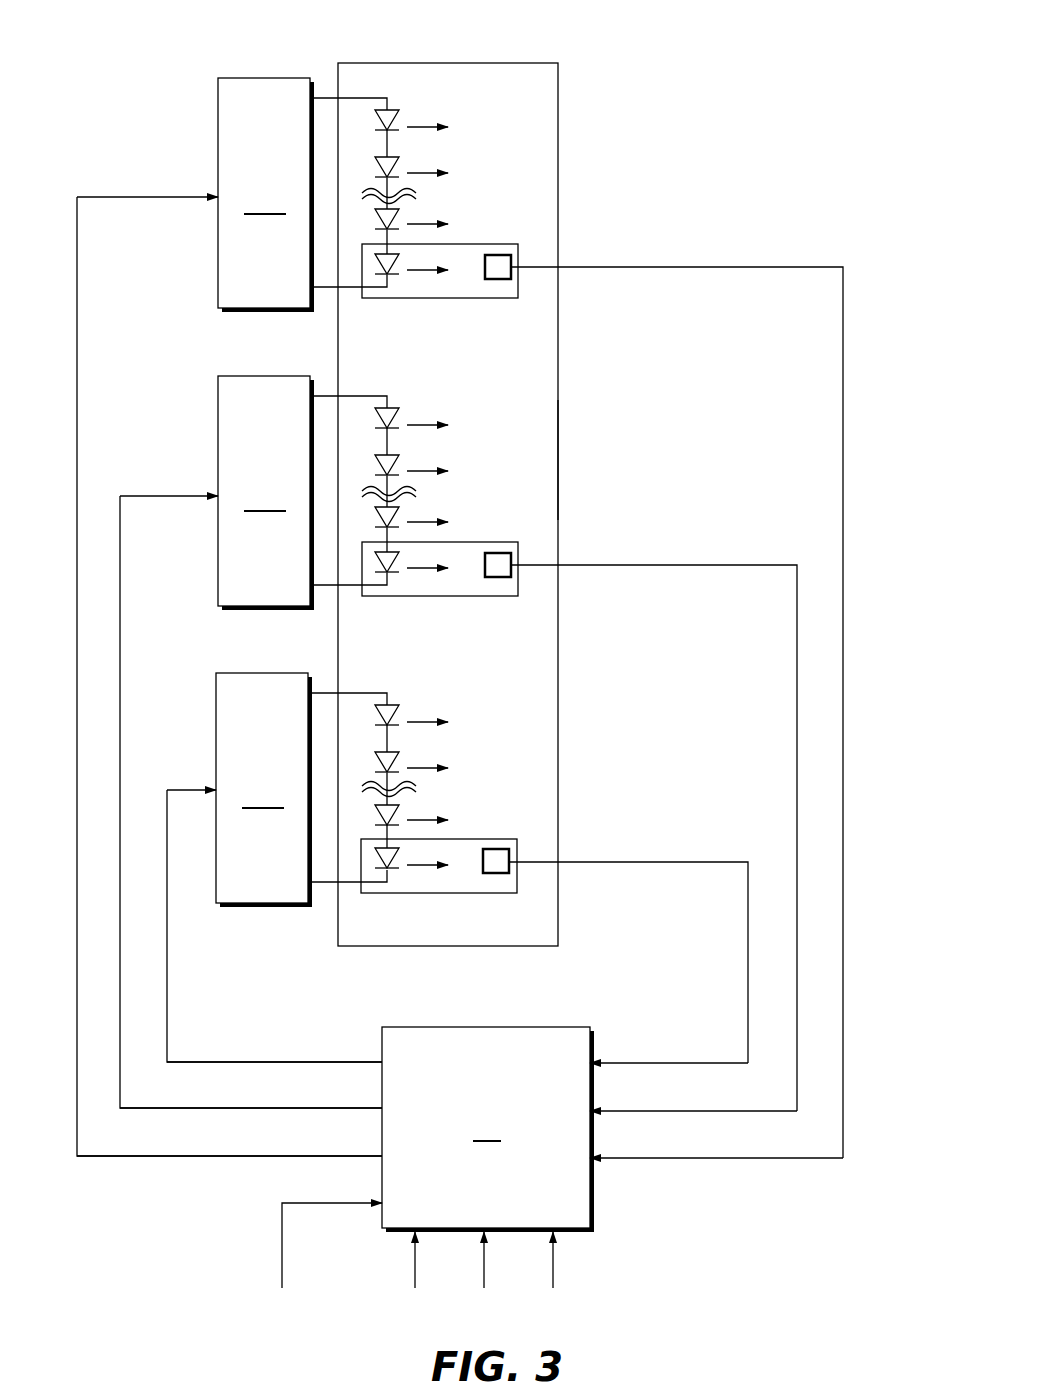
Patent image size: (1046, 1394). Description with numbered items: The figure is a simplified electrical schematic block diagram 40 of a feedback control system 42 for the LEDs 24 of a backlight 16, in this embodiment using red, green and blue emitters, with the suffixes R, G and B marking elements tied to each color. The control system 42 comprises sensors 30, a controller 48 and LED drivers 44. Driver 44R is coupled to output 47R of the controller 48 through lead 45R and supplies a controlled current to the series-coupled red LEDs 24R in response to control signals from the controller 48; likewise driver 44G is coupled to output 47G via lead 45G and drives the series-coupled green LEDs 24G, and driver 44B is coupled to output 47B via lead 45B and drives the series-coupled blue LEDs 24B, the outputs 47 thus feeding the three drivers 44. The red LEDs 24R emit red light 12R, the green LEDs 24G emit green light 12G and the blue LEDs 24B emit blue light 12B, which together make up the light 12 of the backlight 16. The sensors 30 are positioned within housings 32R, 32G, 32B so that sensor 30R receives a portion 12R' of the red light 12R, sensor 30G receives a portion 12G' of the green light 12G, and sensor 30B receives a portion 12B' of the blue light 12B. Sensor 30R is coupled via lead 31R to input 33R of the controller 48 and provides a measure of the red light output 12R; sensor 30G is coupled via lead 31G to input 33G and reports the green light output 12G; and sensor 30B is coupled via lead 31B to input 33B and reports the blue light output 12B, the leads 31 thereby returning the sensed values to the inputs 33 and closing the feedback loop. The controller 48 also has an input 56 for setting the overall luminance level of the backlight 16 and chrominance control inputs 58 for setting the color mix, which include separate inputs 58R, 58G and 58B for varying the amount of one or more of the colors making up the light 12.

The light 12 is at (612, 100).
The red light 12R is at (478, 175).
The green light 12G is at (476, 473).
The blue light 12B is at (476, 771).
The portion of red light 12R' is at (406, 304).
The portion of green light 12G' is at (406, 602).
The portion of blue light 12B' is at (406, 899).
The backlight 16 is at (558, 460).
The LEDs 24 is at (322, 53).
The series-coupled red LEDs 24R is at (388, 92).
The series-coupled green LEDs 24G is at (390, 388).
The series-coupled blue LEDs 24B is at (390, 686).
The sensors 30 is at (497, 922).
The red sensor 30R is at (511, 276).
The green sensor 30G is at (511, 573).
The blue sensor 30B is at (509, 870).
The leads 31 is at (818, 242).
The lead 31R is at (843, 283).
The lead 31G is at (797, 608).
The lead 31B is at (748, 935).
The housing 32R is at (495, 244).
The housing 32G is at (495, 542).
The housing 32B is at (495, 839).
The inputs 33 is at (645, 1165).
The input 33R is at (598, 1155).
The input 33G is at (598, 1108).
The input 33B is at (598, 1060).
The electrical schematic block diagram 40 is at (811, 1331).
The feedback control system 42 is at (683, 208).
The LED drivers 44 is at (193, 128).
The driver 44R is at (265, 194).
The driver 44G is at (265, 492).
The driver 44B is at (263, 789).
The lead 45R is at (77, 283).
The lead 45G is at (120, 605).
The lead 45B is at (167, 935).
The outputs 47 is at (350, 1022).
The output 47R is at (355, 1156).
The output 47G is at (355, 1108).
The output 47B is at (355, 1062).
The controller 48 is at (487, 1128).
The input 56 is at (282, 1220).
The chrominance control inputs 58 is at (612, 1268).
The input 58R is at (412, 1262).
The input 58G is at (481, 1280).
The input 58B is at (555, 1280).